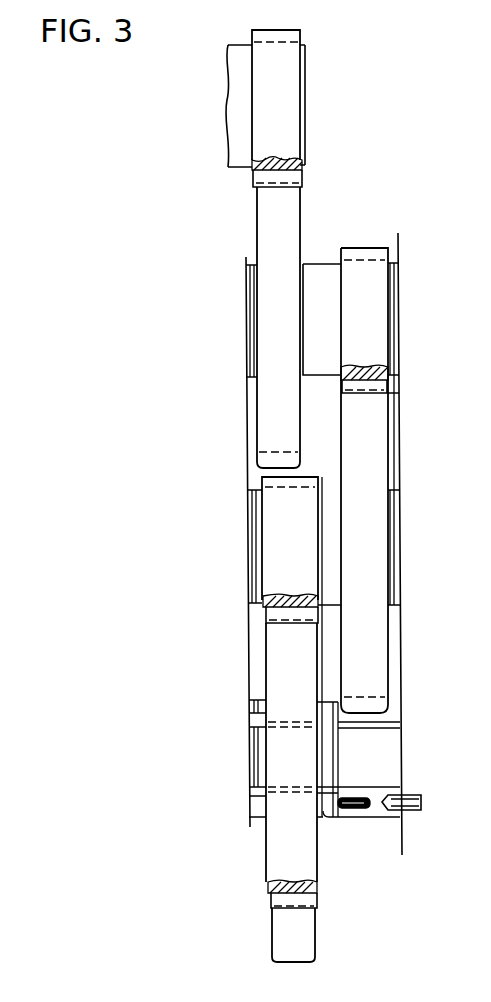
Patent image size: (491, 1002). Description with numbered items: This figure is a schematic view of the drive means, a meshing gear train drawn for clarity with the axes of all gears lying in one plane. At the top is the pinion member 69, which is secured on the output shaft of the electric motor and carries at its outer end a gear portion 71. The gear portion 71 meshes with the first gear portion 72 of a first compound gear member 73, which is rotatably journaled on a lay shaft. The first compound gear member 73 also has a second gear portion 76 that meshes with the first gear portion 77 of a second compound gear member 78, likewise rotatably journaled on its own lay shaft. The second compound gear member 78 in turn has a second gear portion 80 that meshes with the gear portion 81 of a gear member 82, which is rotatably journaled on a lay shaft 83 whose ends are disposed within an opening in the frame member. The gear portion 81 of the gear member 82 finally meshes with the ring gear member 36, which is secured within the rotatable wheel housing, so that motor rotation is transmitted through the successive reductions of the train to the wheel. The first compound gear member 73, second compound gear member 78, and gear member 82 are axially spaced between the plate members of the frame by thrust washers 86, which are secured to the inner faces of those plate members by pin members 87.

The ring gear member 36 is at (302, 927).
The pinion member 69 is at (236, 150).
The gear portion 71 is at (296, 34).
The first gear portion 72 is at (292, 182).
The first compound gear member 73 is at (313, 272).
The second gear portion 76 is at (363, 256).
The first gear portion 77 is at (378, 386).
The second compound gear member 78 is at (327, 498).
The second gear portion 80 is at (275, 479).
The gear portion 81 is at (265, 620).
The gear member 82 is at (263, 713).
The lay shaft 83 is at (385, 738).
The thrust washers 86 is at (250, 332).
The pin members 87 is at (356, 810).